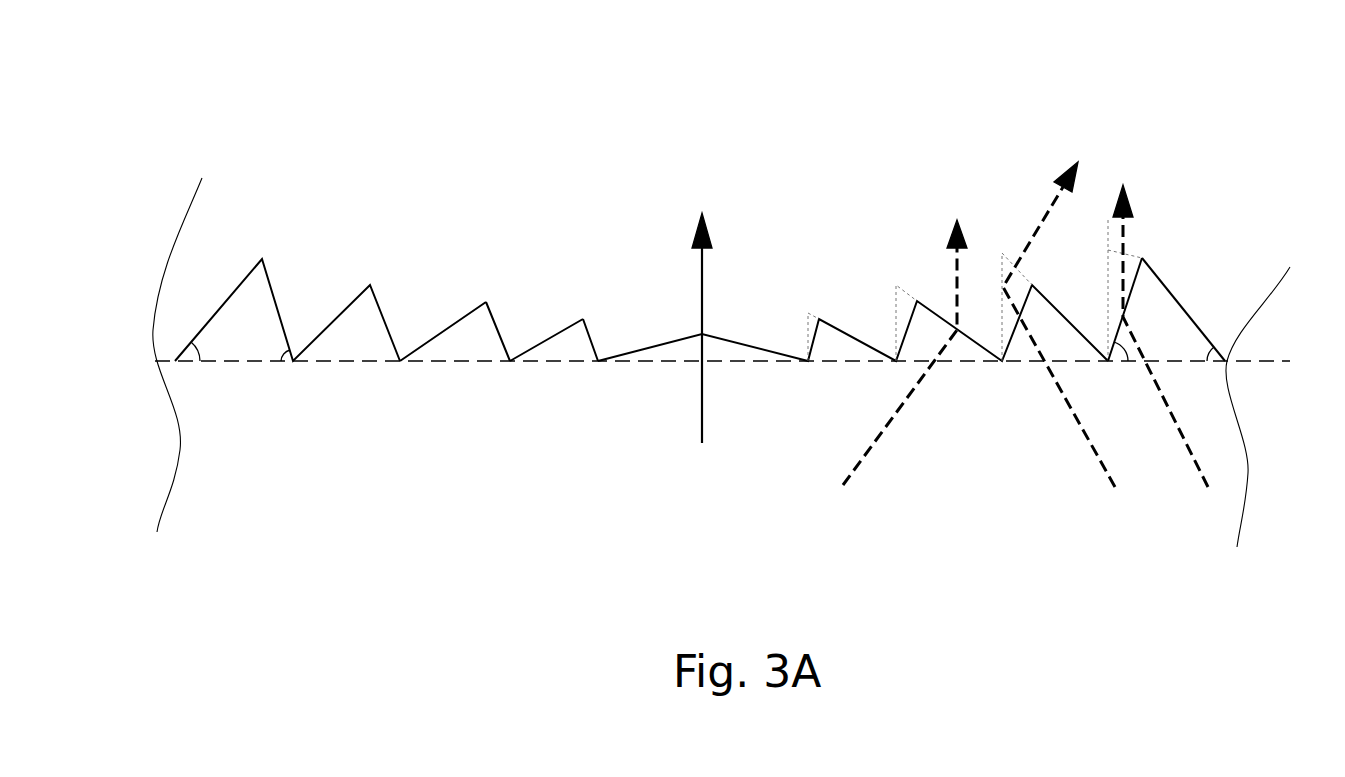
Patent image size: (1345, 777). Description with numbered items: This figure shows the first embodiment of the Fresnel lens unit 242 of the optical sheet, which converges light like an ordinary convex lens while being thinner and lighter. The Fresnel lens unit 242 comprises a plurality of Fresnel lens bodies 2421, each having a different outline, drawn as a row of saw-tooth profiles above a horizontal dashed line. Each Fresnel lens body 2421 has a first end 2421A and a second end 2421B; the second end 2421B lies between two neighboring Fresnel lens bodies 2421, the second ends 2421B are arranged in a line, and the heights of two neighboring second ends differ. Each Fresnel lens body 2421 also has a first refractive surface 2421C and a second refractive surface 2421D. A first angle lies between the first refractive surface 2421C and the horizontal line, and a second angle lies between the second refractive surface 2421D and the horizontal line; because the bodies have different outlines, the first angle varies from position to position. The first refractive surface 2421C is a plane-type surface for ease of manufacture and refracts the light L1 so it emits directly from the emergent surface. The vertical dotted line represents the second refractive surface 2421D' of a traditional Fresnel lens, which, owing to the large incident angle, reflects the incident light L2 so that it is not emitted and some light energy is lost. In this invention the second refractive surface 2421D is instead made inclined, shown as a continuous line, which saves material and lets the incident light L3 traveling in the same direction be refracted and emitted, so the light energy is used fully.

The Fresnel lens unit 242 is at (1200, 623).
The Fresnel lens body 2421 is at (257, 297).
The first end 2421A is at (515, 283).
The second end 2421B is at (527, 381).
The first refractive surface 2421C is at (1213, 298).
The second refractive surface 2421D is at (1169, 233).
The second refractive surface of traditional Fresnel lens 2421D' is at (1105, 205).
The light L1 is at (895, 369).
The incident light L2 is at (1064, 342).
The incident light L3 is at (1167, 354).